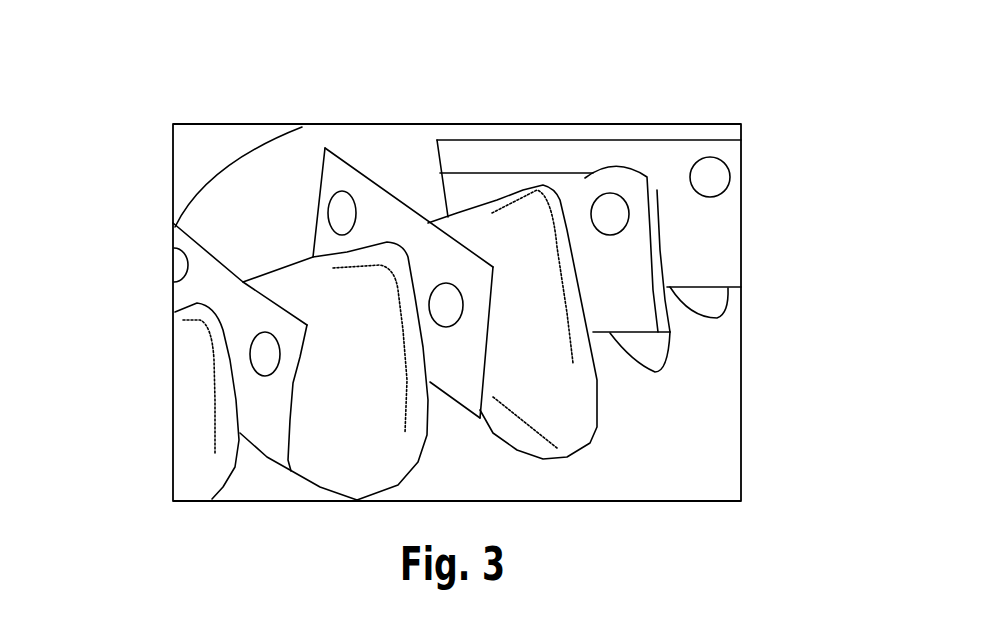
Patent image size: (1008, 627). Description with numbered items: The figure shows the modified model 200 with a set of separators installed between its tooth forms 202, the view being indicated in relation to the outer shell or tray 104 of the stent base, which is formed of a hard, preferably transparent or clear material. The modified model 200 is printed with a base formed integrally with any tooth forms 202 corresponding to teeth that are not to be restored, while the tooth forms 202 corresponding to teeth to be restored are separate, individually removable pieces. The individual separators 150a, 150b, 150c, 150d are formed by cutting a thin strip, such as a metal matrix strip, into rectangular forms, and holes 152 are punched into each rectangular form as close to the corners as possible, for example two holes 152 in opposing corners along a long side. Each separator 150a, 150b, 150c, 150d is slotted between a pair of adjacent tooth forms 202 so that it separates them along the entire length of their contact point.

The outer shell or tray 104 is at (290, 86).
The separator 150a is at (280, 437).
The separator 150b is at (378, 220).
The separator 150c is at (467, 198).
The separator 150d is at (700, 233).
The holes 152 is at (610, 213).
The modified model 200 is at (660, 471).
The tooth forms 202 is at (307, 298).